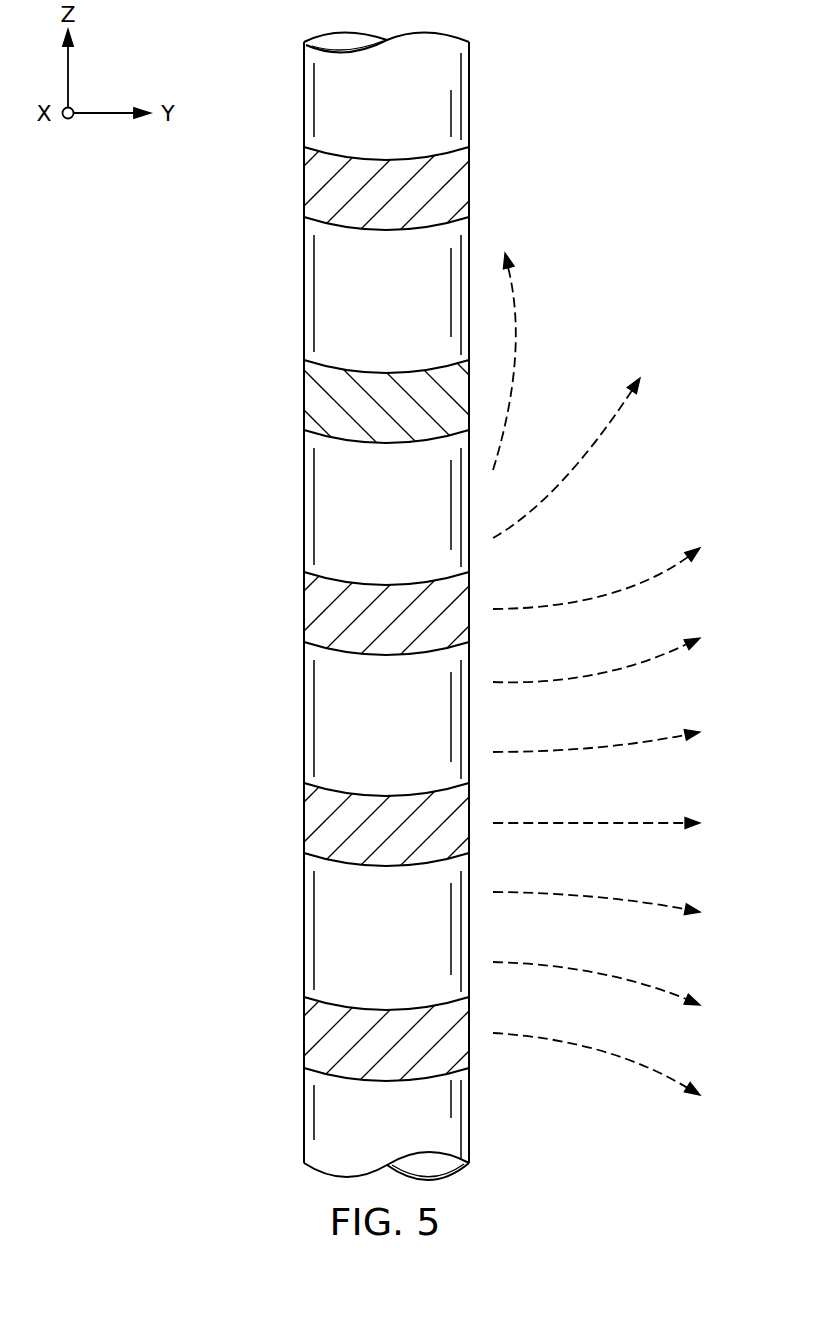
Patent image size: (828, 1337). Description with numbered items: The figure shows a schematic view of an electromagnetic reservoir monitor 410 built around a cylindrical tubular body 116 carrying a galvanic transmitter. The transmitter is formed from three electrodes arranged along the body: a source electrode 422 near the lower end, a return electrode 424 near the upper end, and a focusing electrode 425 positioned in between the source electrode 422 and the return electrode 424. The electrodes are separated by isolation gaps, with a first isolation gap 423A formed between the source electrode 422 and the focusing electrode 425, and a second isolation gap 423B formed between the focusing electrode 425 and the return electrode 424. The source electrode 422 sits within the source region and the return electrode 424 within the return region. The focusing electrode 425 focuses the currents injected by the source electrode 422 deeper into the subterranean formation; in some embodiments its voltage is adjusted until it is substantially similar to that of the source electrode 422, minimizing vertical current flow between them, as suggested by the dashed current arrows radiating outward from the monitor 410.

The electromagnetic reservoir monitor 410 is at (113, 265).
The tubular body / conduit 116 is at (470, 103).
The return electrode 424 is at (310, 178).
The second isolation gap 423B is at (315, 393).
The focusing electrode 425 is at (313, 605).
The first isolation gap 423A is at (313, 822).
The source electrode 422 is at (313, 1035).